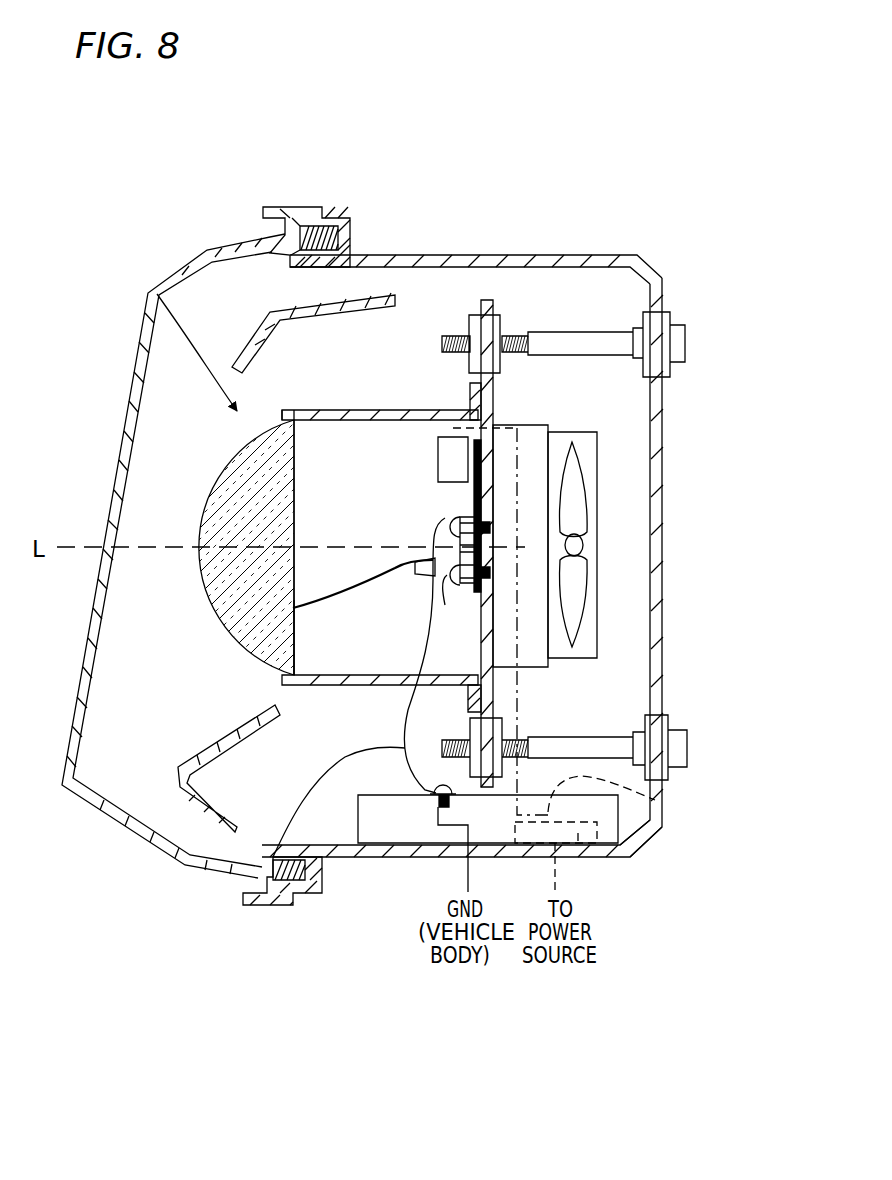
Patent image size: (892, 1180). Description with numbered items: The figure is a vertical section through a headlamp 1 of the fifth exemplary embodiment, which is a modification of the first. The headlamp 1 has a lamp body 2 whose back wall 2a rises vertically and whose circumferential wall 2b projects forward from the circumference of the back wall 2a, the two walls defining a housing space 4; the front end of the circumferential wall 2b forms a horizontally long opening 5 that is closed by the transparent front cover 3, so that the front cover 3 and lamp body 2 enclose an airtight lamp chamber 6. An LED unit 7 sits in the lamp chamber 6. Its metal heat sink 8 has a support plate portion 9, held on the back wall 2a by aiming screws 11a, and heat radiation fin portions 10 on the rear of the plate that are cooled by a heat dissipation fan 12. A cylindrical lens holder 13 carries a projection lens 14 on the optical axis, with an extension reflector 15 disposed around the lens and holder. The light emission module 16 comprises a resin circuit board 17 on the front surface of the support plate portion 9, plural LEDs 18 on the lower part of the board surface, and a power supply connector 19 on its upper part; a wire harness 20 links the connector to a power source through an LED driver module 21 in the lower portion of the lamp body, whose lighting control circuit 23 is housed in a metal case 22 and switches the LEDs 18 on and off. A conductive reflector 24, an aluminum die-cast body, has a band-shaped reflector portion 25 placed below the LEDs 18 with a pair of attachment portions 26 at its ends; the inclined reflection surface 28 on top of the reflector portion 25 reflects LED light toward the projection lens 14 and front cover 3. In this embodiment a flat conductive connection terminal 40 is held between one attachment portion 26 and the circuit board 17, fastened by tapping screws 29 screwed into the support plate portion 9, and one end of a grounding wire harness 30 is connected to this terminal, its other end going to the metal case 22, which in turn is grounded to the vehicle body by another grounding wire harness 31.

The headlamp 1 is at (571, 150).
The lamp body 2 is at (683, 165).
The back wall 2a is at (662, 294).
The circumferential wall 2b is at (570, 263).
The front cover 3 is at (173, 549).
The housing space 4 is at (269, 459).
The opening 5 is at (262, 250).
The lamp chamber 6 is at (269, 459).
The LED unit 7 is at (143, 325).
The heat sink 8 is at (624, 543).
The support plate portion 9 is at (487, 387).
The heat radiation fin portions 10 is at (532, 437).
The aiming screws 11a is at (587, 340).
The heat dissipation fan 12 is at (587, 533).
The lens holder 13 is at (403, 410).
The projection lens 14 is at (222, 505).
The extension reflector 15 is at (254, 332).
The light emission module 16 is at (447, 454).
The circuit board 17 is at (418, 483).
The LEDs 18 is at (497, 545).
The power supply connector 19 is at (292, 418).
The wire harness 20 is at (655, 800).
The LED driver module 21 is at (704, 840).
The metal case 22 is at (655, 826).
The lighting control circuit 23 is at (585, 845).
The conductive reflector 24 is at (147, 636).
The reflector portion 25 is at (285, 598).
The attachment portions 26 is at (493, 560).
The reflection surface 28 is at (300, 582).
The tapping screw 29 is at (445, 605).
The grounding wire harness 30 is at (273, 862).
The grounding wire harness 31 is at (447, 866).
The connection terminal 40 is at (481, 520).